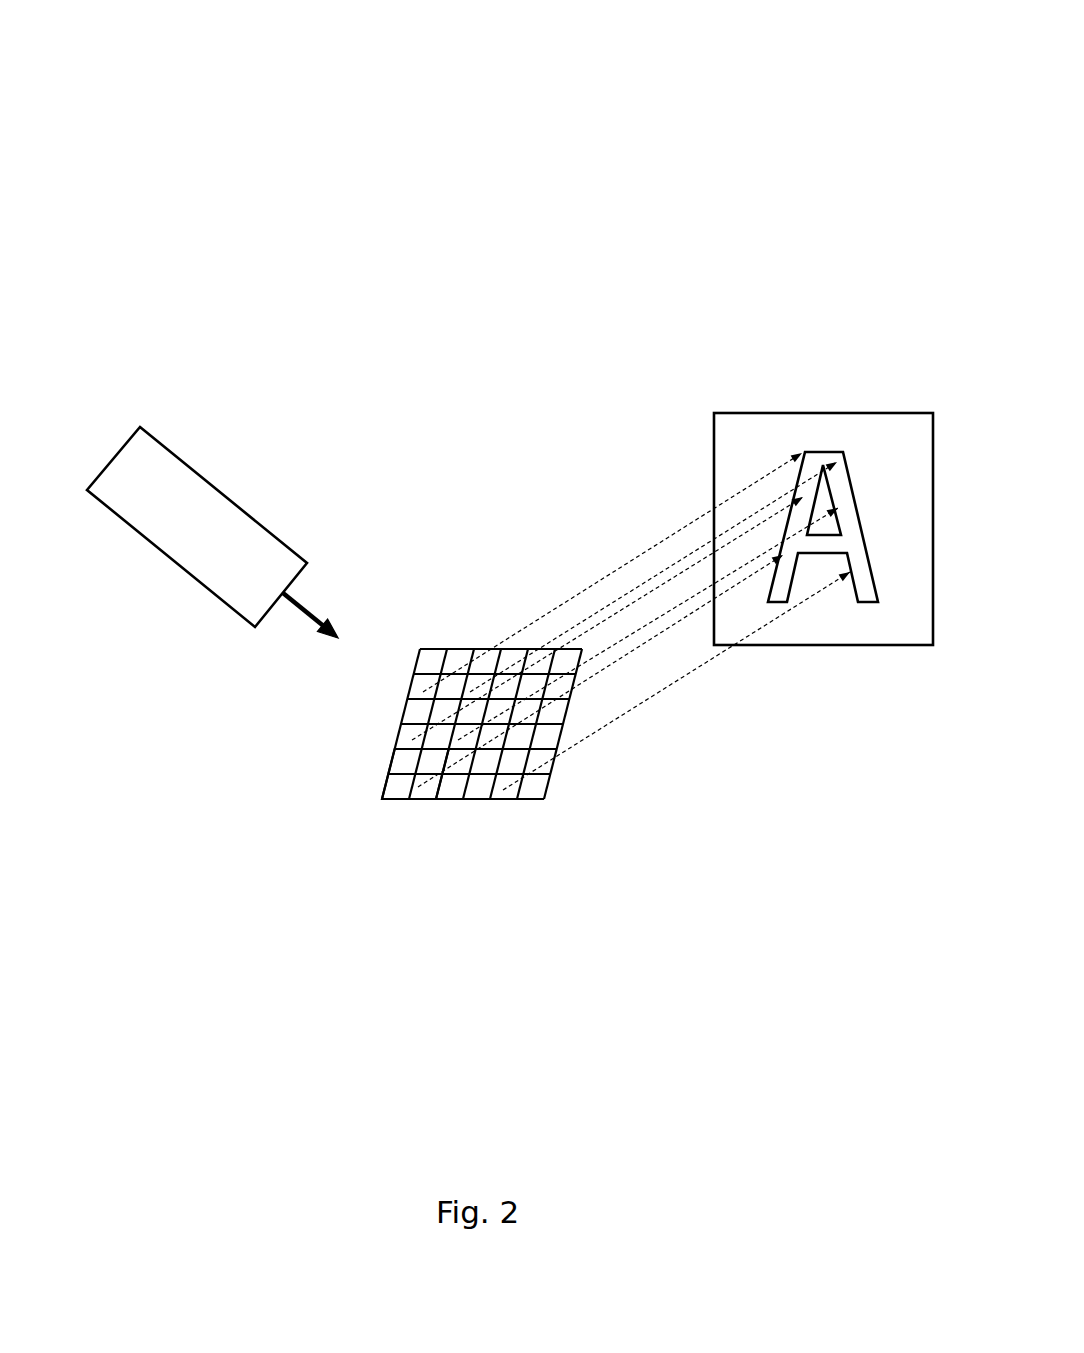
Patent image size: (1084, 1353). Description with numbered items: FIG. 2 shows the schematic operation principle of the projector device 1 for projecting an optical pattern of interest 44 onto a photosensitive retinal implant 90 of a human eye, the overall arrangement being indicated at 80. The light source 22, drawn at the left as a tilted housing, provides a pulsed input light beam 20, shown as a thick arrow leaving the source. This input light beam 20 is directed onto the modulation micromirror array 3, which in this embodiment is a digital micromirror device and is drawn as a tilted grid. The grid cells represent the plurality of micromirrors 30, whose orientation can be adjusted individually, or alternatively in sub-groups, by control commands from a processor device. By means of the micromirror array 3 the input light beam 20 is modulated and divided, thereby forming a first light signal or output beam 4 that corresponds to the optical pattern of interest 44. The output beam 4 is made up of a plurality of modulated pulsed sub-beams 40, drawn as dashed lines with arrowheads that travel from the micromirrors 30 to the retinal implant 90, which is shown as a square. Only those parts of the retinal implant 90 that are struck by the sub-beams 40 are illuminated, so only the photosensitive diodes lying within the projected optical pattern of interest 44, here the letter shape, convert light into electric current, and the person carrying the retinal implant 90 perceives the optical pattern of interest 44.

The optical system 80 is at (213, 147).
The projector device 1 is at (165, 290).
The light source 22 is at (230, 592).
The pulsed input light beam 20 is at (322, 592).
The output beam 4 is at (617, 533).
The modulation micromirror array 3 is at (415, 815).
The micromirrors 30 is at (408, 755).
The sub-beams 40 is at (663, 689).
The photosensitive retinal implant 90 is at (870, 433).
The optical pattern of interest 44 is at (867, 587).